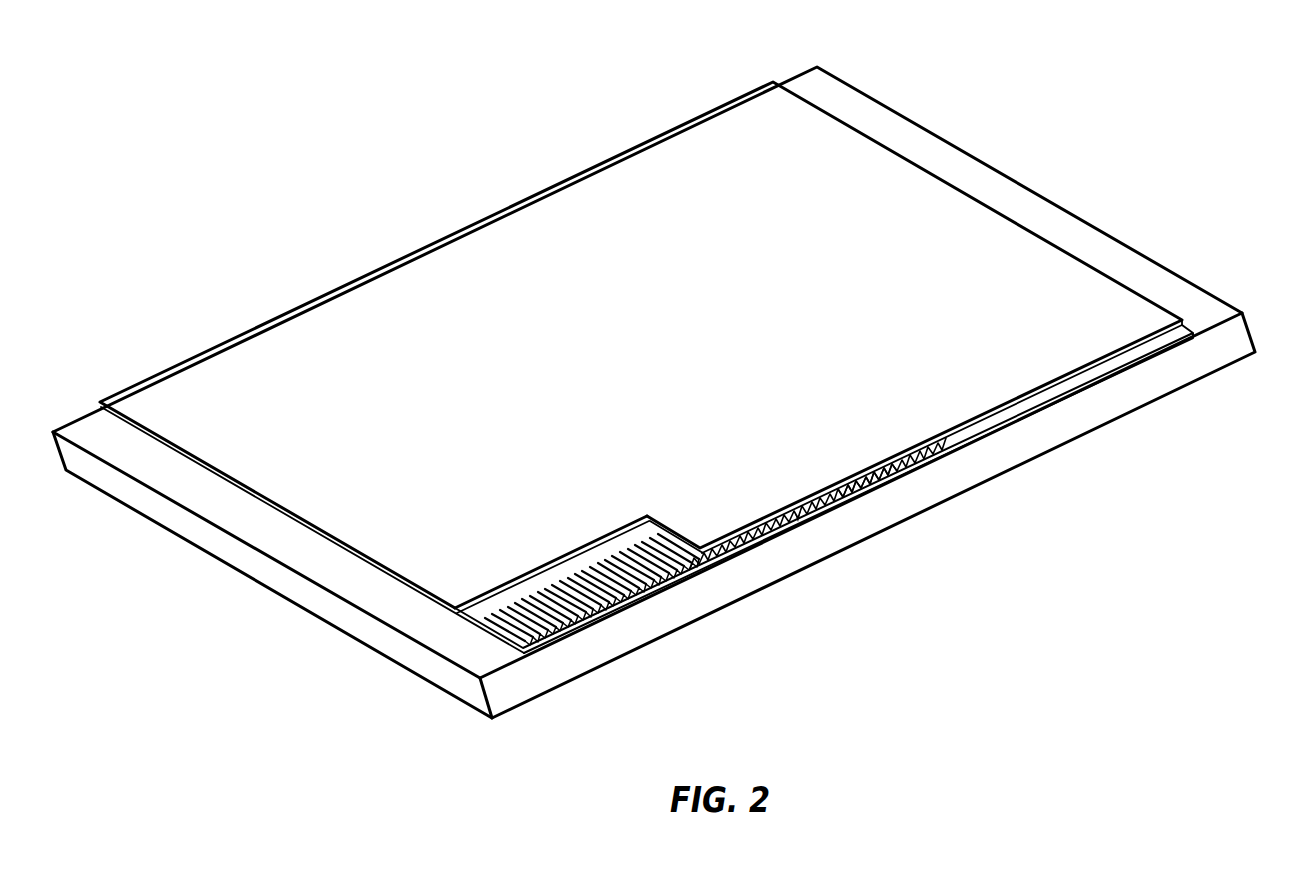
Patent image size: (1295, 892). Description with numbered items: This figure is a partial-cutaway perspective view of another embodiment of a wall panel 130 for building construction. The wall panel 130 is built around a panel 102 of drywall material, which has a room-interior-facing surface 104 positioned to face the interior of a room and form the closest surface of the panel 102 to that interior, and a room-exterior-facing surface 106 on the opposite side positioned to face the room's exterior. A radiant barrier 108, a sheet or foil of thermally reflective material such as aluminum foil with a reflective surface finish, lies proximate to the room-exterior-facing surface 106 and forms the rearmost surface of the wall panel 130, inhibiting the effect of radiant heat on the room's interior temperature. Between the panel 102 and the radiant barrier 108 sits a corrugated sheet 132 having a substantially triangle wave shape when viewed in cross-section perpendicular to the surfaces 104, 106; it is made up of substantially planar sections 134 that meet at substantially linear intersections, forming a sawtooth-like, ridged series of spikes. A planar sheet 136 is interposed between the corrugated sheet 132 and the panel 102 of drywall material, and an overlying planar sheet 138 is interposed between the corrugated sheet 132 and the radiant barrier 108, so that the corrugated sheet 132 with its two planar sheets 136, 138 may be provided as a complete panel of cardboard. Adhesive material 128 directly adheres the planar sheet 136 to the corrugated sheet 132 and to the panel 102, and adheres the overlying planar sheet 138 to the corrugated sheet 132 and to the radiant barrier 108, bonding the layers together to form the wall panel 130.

The panel of drywall material 102 is at (1162, 382).
The room-interior-facing surface 104 is at (1102, 431).
The room-exterior-facing surface 106 is at (1204, 305).
The radiant barrier 108 is at (668, 158).
The adhesive material 128 is at (799, 522).
The wall panel 130 is at (668, 387).
The corrugated sheet 132 is at (925, 467).
The planar sections 134 is at (890, 470).
The planar sheet 136 is at (663, 590).
The overlying planar sheet 138 is at (482, 606).